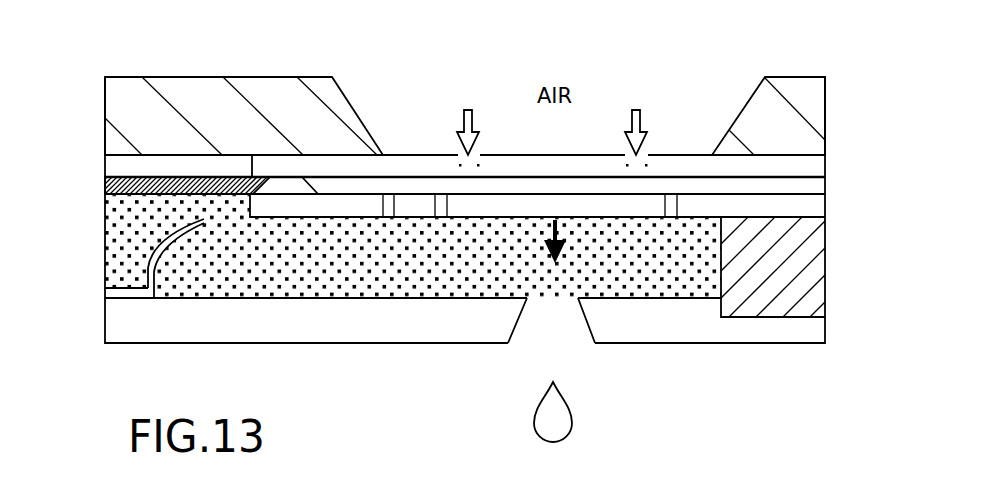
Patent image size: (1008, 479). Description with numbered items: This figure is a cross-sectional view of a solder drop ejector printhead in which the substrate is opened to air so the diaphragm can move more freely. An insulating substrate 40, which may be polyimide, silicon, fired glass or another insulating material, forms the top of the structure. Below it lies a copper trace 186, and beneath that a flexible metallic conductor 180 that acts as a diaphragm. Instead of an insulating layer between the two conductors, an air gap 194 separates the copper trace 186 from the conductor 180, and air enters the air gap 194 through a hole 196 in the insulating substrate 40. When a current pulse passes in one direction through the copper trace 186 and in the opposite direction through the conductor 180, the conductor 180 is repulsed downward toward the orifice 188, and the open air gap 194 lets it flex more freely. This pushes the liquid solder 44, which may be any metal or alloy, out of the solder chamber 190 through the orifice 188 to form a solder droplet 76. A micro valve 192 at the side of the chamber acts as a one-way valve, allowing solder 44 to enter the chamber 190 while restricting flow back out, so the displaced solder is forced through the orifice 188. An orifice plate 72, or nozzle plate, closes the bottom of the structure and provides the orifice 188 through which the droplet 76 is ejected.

The insulating substrate 40 is at (105, 108).
The hole 196 is at (694, 104).
The copper trace 186 is at (822, 162).
The air gap 194 is at (822, 188).
The flexible metallic conductor 180 is at (822, 213).
The liquid solder 44 is at (431, 261).
The solder chamber 190 is at (365, 278).
The micro valve 192 is at (153, 255).
The orifice plate 72 is at (105, 325).
The orifice 188 is at (560, 323).
The solder droplet 76 is at (560, 427).